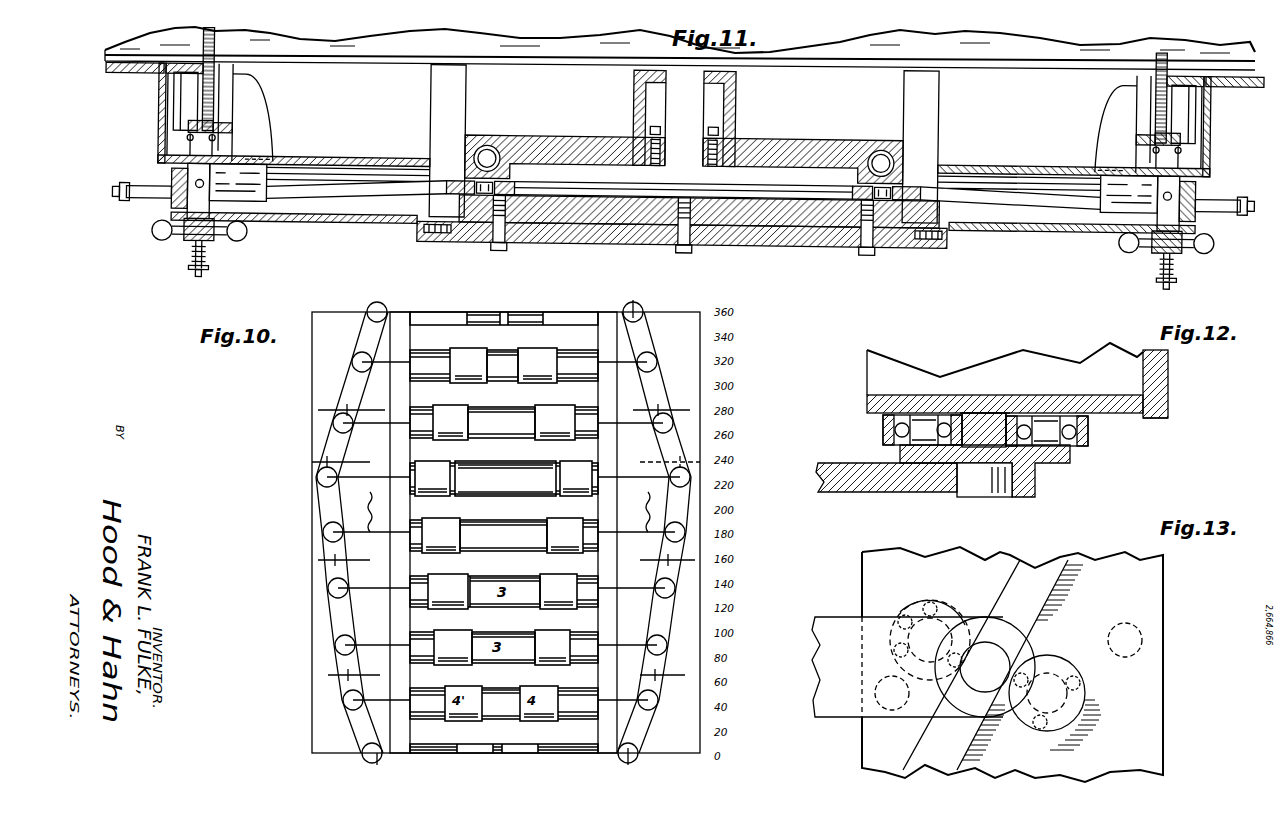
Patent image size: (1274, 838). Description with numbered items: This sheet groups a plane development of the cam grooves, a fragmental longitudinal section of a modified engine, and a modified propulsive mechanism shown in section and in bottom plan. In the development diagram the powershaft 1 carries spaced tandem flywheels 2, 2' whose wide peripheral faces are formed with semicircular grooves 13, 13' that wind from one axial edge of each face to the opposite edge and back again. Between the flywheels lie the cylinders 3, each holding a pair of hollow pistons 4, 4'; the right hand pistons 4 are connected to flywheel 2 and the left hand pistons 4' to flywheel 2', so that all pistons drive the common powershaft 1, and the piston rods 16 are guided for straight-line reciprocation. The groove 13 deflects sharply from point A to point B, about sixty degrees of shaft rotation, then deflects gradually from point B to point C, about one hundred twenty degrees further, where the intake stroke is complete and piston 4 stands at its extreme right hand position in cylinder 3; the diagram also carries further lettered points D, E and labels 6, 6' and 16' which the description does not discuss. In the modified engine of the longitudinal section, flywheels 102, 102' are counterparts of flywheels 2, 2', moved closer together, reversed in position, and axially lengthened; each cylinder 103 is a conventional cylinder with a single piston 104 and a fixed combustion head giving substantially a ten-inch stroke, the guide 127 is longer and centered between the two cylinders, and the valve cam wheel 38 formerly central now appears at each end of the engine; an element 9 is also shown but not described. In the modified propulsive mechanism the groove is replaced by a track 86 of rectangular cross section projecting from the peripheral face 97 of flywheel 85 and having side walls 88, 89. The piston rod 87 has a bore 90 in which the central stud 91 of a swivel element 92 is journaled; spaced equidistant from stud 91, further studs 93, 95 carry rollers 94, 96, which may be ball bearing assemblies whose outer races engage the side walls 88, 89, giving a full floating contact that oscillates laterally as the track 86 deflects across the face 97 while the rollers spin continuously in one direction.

In FIG. 11, the powershaft 1 is at (808, 66).
In FIG. 10, the flywheel 2 is at (654, 515).
In FIG. 10, the flywheel 2' is at (352, 509).
In FIG. 10, the cylinder 3 is at (505, 478).
In FIG. 10, the piston 4 is at (576, 478).
In FIG. 10, the piston 4' is at (432, 478).
In FIG. 10, the spacer block 6 is at (548, 535).
In FIG. 10, the spacer block 6' is at (455, 535).
In FIG. 11, the adjusting shaft 9 is at (140, 196).
In FIG. 11, the cam groove 13 is at (565, 141).
In FIG. 10, the cam groove 13 is at (644, 527).
In FIG. 11, the cam groove 13' is at (803, 142).
In FIG. 10, the cam groove 13' is at (333, 532).
In FIG. 10, the piston rod 16 is at (641, 512).
In FIG. 10, the break line 16' is at (365, 512).
In FIG. 11, the valve cam wheel 38 is at (195, 115).
In FIG. 12, the flywheel 85 is at (1170, 385).
In FIG. 13, the flywheel 85 is at (1163, 668).
In FIG. 12, the track 86 is at (988, 412).
In FIG. 13, the track 86 is at (1045, 582).
In FIG. 12, the piston rod 87 is at (862, 494).
In FIG. 13, the piston rod 87 is at (836, 618).
In FIG. 12, the side wall 88 is at (976, 410).
In FIG. 13, the side wall 88 is at (1006, 589).
In FIG. 12, the side wall 89 is at (1006, 418).
In FIG. 13, the side wall 89 is at (1040, 620).
In FIG. 12, the bore 90 is at (942, 495).
In FIG. 13, the bore 90 is at (948, 700).
In FIG. 12, the stud 91 is at (990, 492).
In FIG. 13, the stud 91 is at (1000, 668).
In FIG. 12, the swivel element 92 is at (1072, 464).
In FIG. 13, the swivel element 92 is at (1076, 712).
In FIG. 12, the stud 93 is at (1045, 428).
In FIG. 13, the stud 93 is at (1125, 640).
In FIG. 12, the roller 94 is at (1090, 449).
In FIG. 13, the roller 94 is at (1080, 682).
In FIG. 12, the stud 95 is at (928, 422).
In FIG. 13, the stud 95 is at (892, 693).
In FIG. 12, the roller 96 is at (885, 439).
In FIG. 13, the roller 96 is at (918, 608).
In FIG. 12, the peripheral face 97 is at (1145, 420).
In FIG. 13, the peripheral face 97 is at (1150, 593).
In FIG. 11, the flywheel 102 is at (447, 141).
In FIG. 11, the flywheel 102' is at (919, 147).
In FIG. 11, the cylinder 103 is at (343, 220).
In FIG. 11, the piston 104 is at (262, 200).
In FIG. 11, the guide 127 is at (757, 220).
In FIG. 10, the point A is at (621, 535).
In FIG. 10, the point B is at (652, 679).
In FIG. 10, the point C is at (660, 462).
In FIG. 10, the reference line D is at (654, 411).
In FIG. 10, the reference line E is at (658, 568).